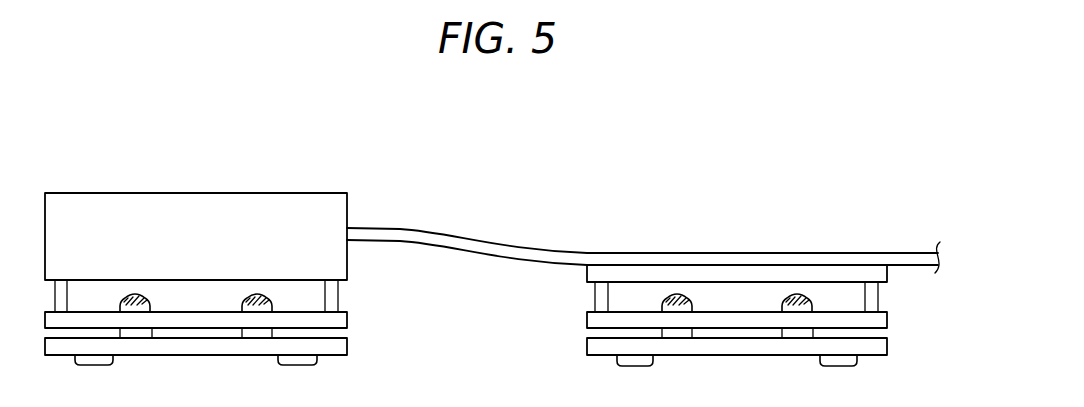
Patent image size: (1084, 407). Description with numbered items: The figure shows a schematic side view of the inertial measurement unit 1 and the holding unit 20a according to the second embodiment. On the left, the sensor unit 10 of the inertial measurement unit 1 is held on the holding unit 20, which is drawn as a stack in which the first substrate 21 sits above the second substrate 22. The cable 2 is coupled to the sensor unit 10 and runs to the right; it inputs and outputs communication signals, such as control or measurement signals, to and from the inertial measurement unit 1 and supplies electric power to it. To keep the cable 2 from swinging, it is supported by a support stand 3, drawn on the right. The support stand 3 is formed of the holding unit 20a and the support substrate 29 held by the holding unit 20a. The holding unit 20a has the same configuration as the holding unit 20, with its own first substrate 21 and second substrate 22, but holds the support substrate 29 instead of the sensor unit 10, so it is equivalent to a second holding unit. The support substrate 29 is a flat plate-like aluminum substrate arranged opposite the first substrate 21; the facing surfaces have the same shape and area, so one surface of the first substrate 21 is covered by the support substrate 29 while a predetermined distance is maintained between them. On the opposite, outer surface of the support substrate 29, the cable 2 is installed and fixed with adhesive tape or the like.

The inertial measurement unit 1 is at (332, 162).
The sensor unit 10 is at (200, 200).
The holding unit 20 is at (358, 312).
The cable 2 is at (604, 255).
The support stand 3 is at (860, 194).
The holding unit 20a is at (574, 314).
The support substrate 29 is at (888, 270).
The first substrate 21 is at (888, 320).
The second substrate 22 is at (888, 343).